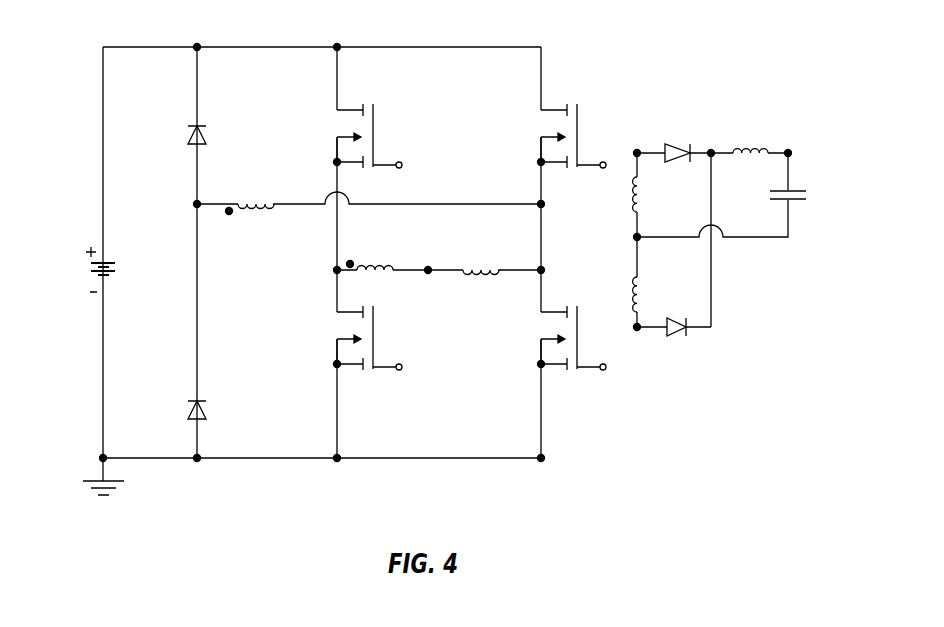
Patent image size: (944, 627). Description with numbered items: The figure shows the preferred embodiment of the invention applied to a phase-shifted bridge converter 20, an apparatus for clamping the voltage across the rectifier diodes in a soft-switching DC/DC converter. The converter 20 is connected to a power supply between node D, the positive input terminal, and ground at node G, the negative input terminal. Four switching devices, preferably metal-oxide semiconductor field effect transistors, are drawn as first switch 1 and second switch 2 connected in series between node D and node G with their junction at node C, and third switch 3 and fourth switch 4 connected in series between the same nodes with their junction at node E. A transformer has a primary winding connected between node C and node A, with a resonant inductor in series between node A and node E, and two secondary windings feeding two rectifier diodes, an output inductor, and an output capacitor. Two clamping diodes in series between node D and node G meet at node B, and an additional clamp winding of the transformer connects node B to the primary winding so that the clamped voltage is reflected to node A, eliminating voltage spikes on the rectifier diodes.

The phase-shifted bridge converter 20 is at (425, 259).
The switch S1 1 is at (370, 136).
The switch S2 2 is at (370, 338).
The switch S3 3 is at (572, 136).
The switch S4 4 is at (573, 338).